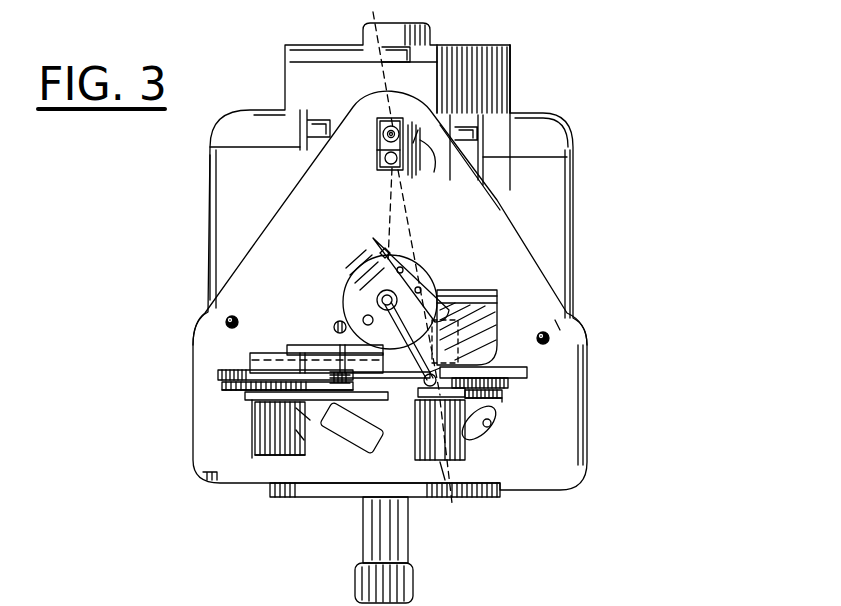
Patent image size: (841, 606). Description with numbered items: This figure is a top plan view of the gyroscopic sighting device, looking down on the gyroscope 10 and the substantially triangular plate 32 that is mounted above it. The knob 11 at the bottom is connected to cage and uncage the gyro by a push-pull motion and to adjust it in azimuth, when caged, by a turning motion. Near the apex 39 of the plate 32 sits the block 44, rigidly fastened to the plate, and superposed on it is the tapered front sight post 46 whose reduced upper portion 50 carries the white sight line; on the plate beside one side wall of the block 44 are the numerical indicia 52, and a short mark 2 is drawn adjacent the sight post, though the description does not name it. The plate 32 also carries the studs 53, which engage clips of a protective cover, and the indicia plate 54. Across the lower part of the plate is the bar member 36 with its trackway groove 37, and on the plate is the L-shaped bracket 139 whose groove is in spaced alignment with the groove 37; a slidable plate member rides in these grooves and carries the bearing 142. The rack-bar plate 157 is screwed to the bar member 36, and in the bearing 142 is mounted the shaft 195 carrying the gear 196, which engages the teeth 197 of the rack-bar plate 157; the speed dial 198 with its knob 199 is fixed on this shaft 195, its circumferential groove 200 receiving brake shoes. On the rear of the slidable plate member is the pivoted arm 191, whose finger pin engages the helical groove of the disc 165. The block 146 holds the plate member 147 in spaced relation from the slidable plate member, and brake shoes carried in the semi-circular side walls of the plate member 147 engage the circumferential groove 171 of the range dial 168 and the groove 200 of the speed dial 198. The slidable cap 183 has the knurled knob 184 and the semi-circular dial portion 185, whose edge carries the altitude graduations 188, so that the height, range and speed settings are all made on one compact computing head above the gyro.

The gyroscope 10 is at (212, 200).
The plate 32 is at (232, 270).
The studs 53 is at (226, 320).
The apex 39 is at (428, 113).
The tapered front sight post 46 is at (380, 127).
The portion 50 is at (390, 118).
The block 44 is at (376, 152).
The axis 2 is at (414, 146).
The numerical indicia 52 is at (433, 166).
The L-shaped bracket 139 is at (497, 306).
The bearing 142 is at (460, 345).
The shaft 195 is at (462, 341).
The gear 196 is at (449, 373).
The arm 191 is at (316, 353).
The block 146 is at (370, 358).
The disc 165 is at (218, 375).
The circumferential groove 171 is at (222, 386).
The dial 168 is at (245, 393).
The semi-circular dial portion 185 is at (250, 399).
The knurled knob 184 is at (260, 427).
The slidable cap 183 is at (253, 450).
The plate member 147 is at (300, 412).
The graduations 188 is at (357, 433).
The bar member 36 is at (527, 372).
The trackway groove 37 is at (508, 383).
The teeth 197 is at (505, 392).
The rack-bar plate 157 is at (490, 395).
The dial 198 is at (480, 398).
The groove 200 is at (470, 400).
The knob 199 is at (447, 483).
The indicia plate 54 is at (372, 455).
The knob 11 is at (362, 578).